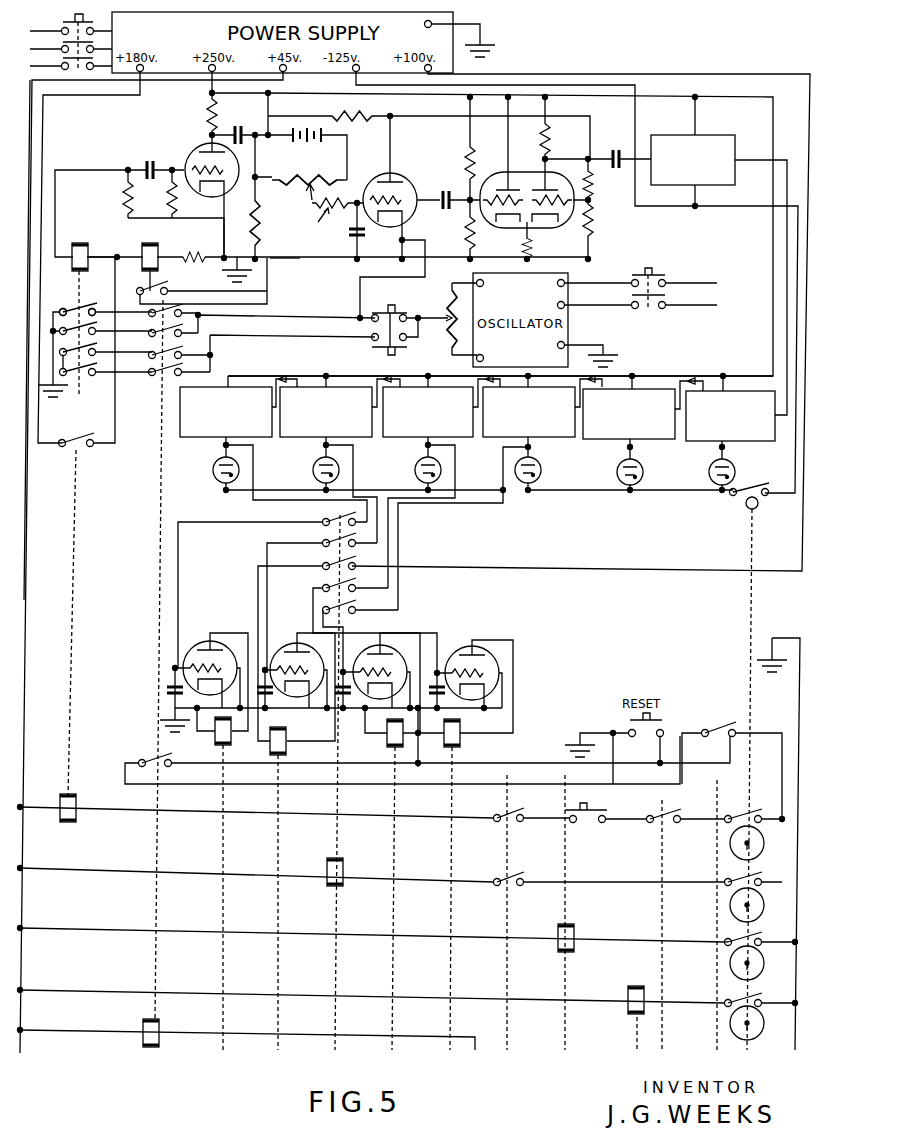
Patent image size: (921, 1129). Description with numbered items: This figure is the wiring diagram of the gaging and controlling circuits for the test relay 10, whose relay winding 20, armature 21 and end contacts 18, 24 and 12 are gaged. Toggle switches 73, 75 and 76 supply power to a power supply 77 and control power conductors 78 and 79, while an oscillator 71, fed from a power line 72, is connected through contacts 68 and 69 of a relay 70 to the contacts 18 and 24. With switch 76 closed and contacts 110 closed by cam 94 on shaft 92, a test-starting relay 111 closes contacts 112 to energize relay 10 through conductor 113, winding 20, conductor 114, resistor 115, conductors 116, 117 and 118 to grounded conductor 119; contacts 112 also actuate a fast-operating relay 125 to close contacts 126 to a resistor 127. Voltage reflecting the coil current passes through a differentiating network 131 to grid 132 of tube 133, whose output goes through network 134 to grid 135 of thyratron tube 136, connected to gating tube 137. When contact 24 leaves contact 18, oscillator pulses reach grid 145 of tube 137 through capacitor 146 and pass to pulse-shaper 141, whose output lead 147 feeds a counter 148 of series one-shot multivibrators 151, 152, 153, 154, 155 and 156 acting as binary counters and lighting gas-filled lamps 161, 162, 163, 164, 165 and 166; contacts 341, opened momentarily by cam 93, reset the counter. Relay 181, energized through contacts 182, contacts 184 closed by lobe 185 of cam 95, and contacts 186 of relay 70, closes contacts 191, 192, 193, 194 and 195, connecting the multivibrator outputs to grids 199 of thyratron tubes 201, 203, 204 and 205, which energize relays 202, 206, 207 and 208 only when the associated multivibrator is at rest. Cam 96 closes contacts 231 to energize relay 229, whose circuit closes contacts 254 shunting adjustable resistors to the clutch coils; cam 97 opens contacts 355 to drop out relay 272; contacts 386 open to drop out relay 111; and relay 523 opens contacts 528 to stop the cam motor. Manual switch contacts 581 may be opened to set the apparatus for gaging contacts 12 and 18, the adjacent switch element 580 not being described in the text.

The toggle switch 75 is at (70, 17).
The power supply 77 is at (460, 14).
The test relay 10 is at (71, 233).
The relay winding 20 is at (89, 256).
The armature 21 is at (74, 290).
The contacts 24 is at (91, 295).
The contacts 18 is at (84, 311).
The normally open contacts 12 is at (70, 390).
The control power line conductor 78 is at (94, 368).
The contacts 68 is at (152, 325).
The contacts 69 is at (198, 331).
The relay 523 is at (154, 360).
The conductor 113 is at (46, 448).
The contacts 112 is at (84, 444).
The conductor 114 is at (68, 169).
The resistor 115 is at (124, 198).
The conductor 116 is at (148, 218).
The conductor 117 is at (207, 218).
The conductor 118 is at (222, 232).
The grounded conductor 119 is at (278, 260).
The fast-operating relay 125 is at (138, 255).
The contacts 126 is at (160, 284).
The differentiating network 131 is at (167, 160).
The grid 132 is at (200, 146).
The tube 133 is at (238, 189).
The network 134 is at (318, 208).
The resistor 127 is at (358, 126).
The grid 135 is at (390, 185).
The thyratron tube 136 is at (398, 166).
The capacitor 146 is at (433, 195).
The grid 145 is at (512, 182).
The gating tube 137 is at (554, 168).
The pulse-shaping circuit 141 is at (732, 135).
The output lead 147 is at (753, 165).
The toggle switch 73 is at (670, 278).
The oscillator 71 is at (568, 343).
The power line 72 is at (689, 315).
The counter 148 is at (657, 378).
The push switch 580 is at (388, 310).
The manual switch contacts 581 is at (398, 350).
The one-shot multivibrator 156 is at (216, 443).
The one-shot multivibrator 155 is at (336, 419).
The one-shot multivibrator 154 is at (434, 442).
The one-shot multivibrator 153 is at (498, 443).
The one-shot multivibrator 152 is at (619, 442).
The one-shot multivibrator 151 is at (702, 443).
The gas-filled indicating lamp 166 is at (214, 480).
The gas-filled indicating lamp 165 is at (355, 466).
The gas-filled indicating lamp 164 is at (415, 468).
The gas-filled indicating lamp 163 is at (543, 480).
The gas-filled indicating lamp 162 is at (660, 466).
The gas-filled indicating lamp 161 is at (735, 468).
The contacts 341 is at (750, 489).
The cam 93 is at (748, 510).
The contacts 194 is at (358, 523).
The contacts 193 is at (358, 544).
The contacts 195 is at (358, 566).
The contacts 192 is at (356, 588).
The contacts 191 is at (356, 610).
The grid 199 is at (336, 669).
The thyratron tube 205 is at (204, 642).
The thyratron tube 204 is at (273, 642).
The thyratron tube 203 is at (377, 644).
The thyratron tube 201 is at (472, 644).
The contacts 186 is at (143, 756).
The relay 208 is at (212, 740).
The relay 207 is at (298, 888).
The relay 206 is at (387, 737).
The relay 202 is at (462, 738).
The contacts 254 is at (726, 728).
The control power line conductor 79 is at (800, 696).
The test-starting relay 111 is at (78, 799).
The contacts 386 is at (501, 810).
The toggle switch 76 is at (590, 822).
The contacts 528 is at (665, 836).
The contacts 110 is at (747, 818).
The cam 94 is at (723, 857).
The contacts 184 is at (751, 881).
The contacts 182 is at (523, 880).
The cam 95 is at (722, 902).
The lobe 185 is at (754, 903).
The relay 181 is at (352, 882).
The relay 229 is at (575, 930).
The contacts 231 is at (724, 943).
The cam 96 is at (722, 966).
The contacts 355 is at (722, 998).
The relay 272 is at (625, 993).
The cam 97 is at (722, 1028).
The shaft 92 is at (745, 1052).
The relay 70 is at (142, 1037).